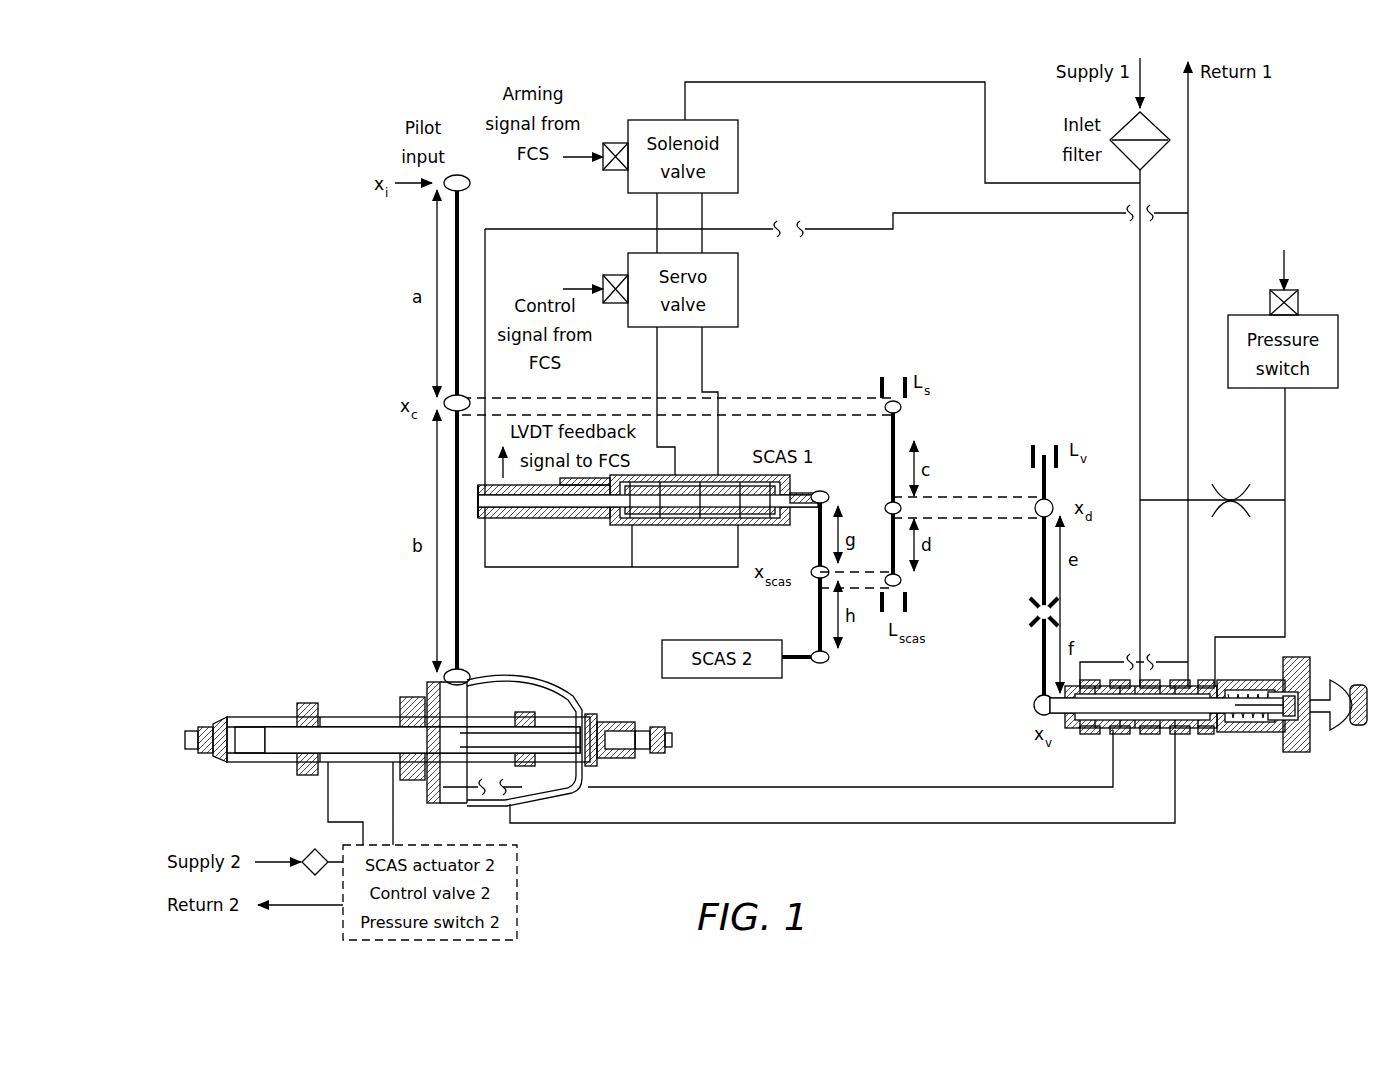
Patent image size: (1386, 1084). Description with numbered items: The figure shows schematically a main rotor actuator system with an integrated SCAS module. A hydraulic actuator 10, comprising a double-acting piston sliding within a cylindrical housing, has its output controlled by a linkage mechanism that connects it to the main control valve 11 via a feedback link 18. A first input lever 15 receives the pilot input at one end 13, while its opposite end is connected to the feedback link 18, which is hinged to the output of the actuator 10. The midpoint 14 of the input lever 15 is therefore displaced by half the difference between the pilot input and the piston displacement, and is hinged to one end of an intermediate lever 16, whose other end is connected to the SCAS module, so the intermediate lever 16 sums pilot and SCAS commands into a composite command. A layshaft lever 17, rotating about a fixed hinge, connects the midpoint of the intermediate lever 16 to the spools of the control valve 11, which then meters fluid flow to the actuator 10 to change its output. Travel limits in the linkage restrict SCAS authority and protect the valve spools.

The hydraulic actuator 10 is at (292, 682).
The main control valve 11 is at (1265, 780).
The pilot input end 13 is at (470, 183).
The midpoint of the first input lever 14 is at (452, 401).
The first input lever 15 is at (452, 250).
The intermediate lever 16 is at (890, 368).
The layshaft lever 17 is at (1040, 565).
The feedback link 18 is at (540, 685).